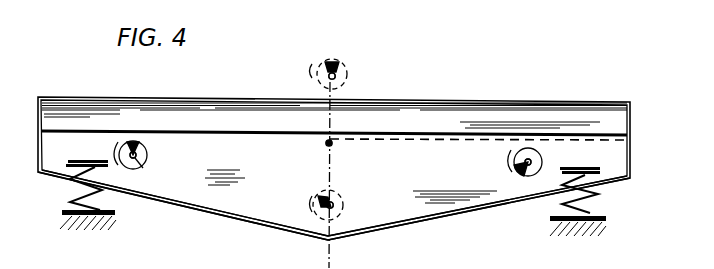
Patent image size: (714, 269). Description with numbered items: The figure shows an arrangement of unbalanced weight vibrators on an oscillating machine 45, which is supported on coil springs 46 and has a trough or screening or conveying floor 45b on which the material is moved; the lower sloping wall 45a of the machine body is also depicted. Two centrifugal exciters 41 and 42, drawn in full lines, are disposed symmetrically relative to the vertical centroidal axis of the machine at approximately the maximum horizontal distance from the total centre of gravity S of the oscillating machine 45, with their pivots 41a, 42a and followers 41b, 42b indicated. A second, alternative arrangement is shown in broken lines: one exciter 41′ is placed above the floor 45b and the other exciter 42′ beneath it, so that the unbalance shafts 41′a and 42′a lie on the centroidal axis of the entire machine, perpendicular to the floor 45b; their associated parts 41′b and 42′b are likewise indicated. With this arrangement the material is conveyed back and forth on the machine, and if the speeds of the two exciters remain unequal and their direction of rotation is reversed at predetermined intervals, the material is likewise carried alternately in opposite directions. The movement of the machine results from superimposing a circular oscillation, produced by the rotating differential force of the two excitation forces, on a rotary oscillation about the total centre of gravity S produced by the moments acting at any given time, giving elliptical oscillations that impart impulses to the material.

The oscillating machine 45 is at (118, 104).
The lower sloping wall of panel 45a is at (238, 207).
The screening or conveying floor 45b is at (462, 132).
The total centre of gravity S is at (343, 103).
The centrifugal exciter 41 is at (140, 144).
The cam pivot 41a is at (143, 168).
The cam follower 41b is at (114, 146).
The exciter 41′ is at (342, 73).
The unbalance shaft 41′a is at (324, 81).
The upper cam follower 41′b is at (323, 64).
The centrifugal exciter 42 is at (527, 168).
The cam pivot 42a is at (533, 158).
The cam follower 42b is at (507, 163).
The exciter 42′ is at (320, 196).
The unbalance shaft 42′a is at (341, 204).
The lower cam follower 42′b is at (313, 206).
The coil springs 46 is at (76, 189).